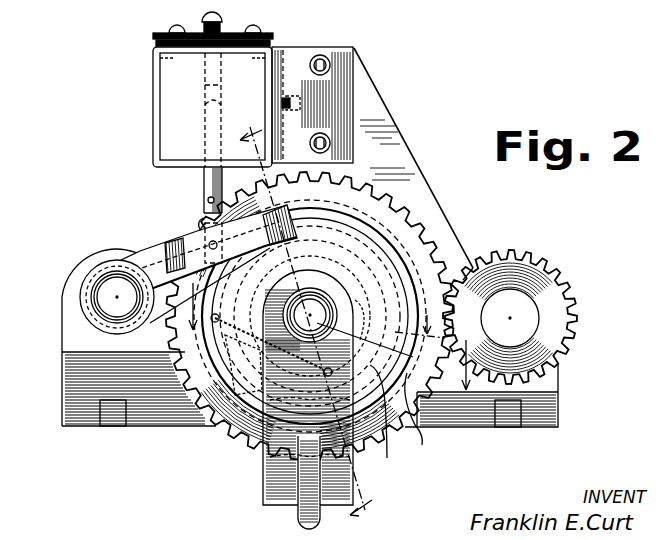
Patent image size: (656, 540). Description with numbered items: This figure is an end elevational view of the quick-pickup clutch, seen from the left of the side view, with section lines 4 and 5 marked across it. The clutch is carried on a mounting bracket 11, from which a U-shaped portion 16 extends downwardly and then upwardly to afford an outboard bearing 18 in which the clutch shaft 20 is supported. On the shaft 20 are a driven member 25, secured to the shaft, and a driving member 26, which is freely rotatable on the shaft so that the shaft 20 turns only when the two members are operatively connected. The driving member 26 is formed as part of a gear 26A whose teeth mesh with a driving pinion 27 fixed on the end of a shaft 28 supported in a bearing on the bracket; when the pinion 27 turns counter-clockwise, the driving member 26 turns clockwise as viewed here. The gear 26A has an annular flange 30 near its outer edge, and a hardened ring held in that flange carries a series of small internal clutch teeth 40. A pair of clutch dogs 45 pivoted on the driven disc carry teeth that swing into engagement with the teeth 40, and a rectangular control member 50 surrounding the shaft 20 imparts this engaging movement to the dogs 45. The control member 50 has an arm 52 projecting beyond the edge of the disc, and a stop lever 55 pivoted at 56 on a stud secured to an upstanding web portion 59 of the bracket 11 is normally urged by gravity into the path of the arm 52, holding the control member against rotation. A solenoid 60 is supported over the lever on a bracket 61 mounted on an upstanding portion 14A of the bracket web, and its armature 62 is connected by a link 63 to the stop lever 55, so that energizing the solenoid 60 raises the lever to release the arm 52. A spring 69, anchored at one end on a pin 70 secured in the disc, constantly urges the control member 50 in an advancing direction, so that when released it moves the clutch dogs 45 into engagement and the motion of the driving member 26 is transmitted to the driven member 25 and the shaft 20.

The mounting bracket 11 is at (150, 418).
The upstanding portion of the web 14A is at (370, 108).
The U-shaped portion 16 is at (265, 470).
The outboard bearing 18 is at (322, 288).
The clutch shaft 20 is at (376, 333).
The driven member 25 is at (385, 419).
The driving member 26 is at (424, 413).
The gear 26A is at (450, 255).
The driving pinion 27 is at (535, 255).
The shaft 28 is at (530, 320).
The annular flange 30 is at (418, 282).
The internal clutch teeth 40 is at (409, 258).
The clutch dogs 45 is at (388, 246).
The control member 50 is at (360, 222).
The arm 52 is at (318, 222).
The stop lever 55 is at (158, 238).
The pivot 56 is at (110, 296).
The upstanding web portion 59 is at (90, 252).
The solenoid 60 is at (162, 95).
The bracket 61 is at (312, 88).
The armature 62 is at (203, 175).
The link 63 is at (203, 230).
The spring 69 is at (220, 370).
The pin 70 is at (216, 345).
The section line 4- 4 is at (300, 327).
The section line 5- 5 is at (324, 336).